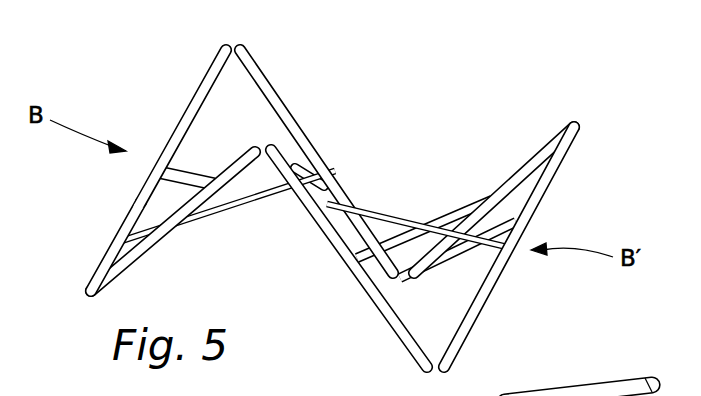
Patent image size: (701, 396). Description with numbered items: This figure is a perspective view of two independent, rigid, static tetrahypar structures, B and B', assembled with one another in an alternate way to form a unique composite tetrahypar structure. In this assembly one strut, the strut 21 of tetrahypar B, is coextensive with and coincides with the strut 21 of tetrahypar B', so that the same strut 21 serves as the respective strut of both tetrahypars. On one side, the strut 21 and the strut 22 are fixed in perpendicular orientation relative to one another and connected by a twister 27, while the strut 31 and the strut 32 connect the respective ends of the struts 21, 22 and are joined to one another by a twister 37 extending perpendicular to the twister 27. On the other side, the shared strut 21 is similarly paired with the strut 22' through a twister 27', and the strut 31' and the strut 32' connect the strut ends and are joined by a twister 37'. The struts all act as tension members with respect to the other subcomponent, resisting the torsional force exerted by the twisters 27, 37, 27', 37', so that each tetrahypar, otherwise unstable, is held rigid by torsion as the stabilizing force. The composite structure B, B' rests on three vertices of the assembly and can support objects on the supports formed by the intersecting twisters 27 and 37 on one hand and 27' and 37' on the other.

The strut 21 is at (320, 187).
The strut 22 is at (182, 108).
The strut 22' is at (509, 247).
The twister 27 is at (200, 145).
The twister 27' is at (417, 193).
The strut 31 is at (316, 142).
The strut 31' is at (494, 200).
The strut 32 is at (139, 260).
The strut 32' is at (349, 258).
The twister 37 is at (226, 218).
The twister 37' is at (436, 260).